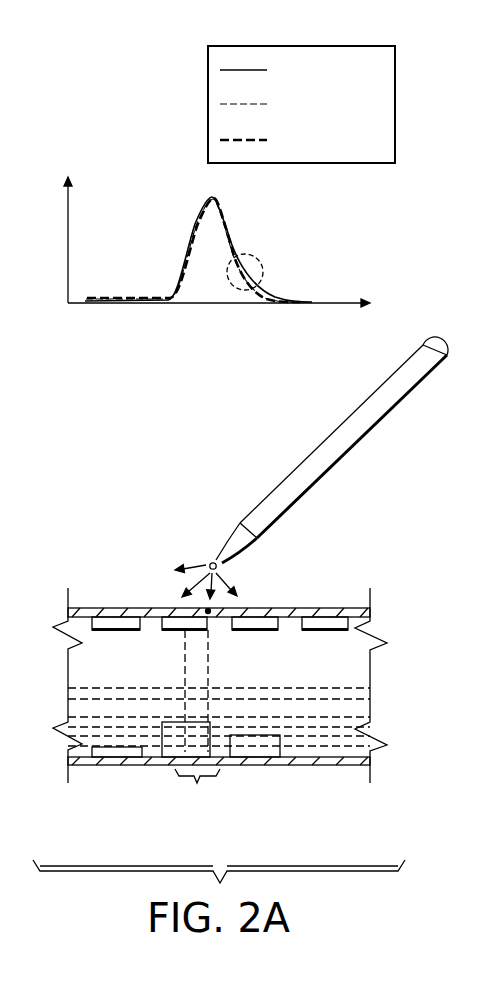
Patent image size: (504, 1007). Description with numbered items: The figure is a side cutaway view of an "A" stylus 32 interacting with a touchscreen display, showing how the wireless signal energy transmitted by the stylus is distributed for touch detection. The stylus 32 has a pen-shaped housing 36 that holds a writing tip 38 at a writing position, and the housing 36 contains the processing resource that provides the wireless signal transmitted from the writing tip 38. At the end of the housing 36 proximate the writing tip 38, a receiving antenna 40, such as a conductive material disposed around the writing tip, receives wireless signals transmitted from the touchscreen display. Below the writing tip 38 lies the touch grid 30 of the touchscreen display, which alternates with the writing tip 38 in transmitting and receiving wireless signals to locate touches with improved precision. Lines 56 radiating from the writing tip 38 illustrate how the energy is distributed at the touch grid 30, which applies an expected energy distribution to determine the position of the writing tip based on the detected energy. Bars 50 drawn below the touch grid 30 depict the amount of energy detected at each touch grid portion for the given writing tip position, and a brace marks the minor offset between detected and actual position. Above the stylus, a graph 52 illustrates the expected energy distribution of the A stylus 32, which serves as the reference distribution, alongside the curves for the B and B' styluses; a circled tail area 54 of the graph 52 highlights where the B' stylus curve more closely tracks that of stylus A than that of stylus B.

The touch grid 30 is at (220, 716).
The stylus 32 is at (255, 453).
The housing 36 is at (365, 398).
The writing tip 38 is at (208, 556).
The receiving antenna 40 is at (246, 549).
The bars 50 is at (253, 735).
The graph 52 is at (168, 186).
The tail area 54 is at (252, 255).
The lines 56 is at (197, 562).